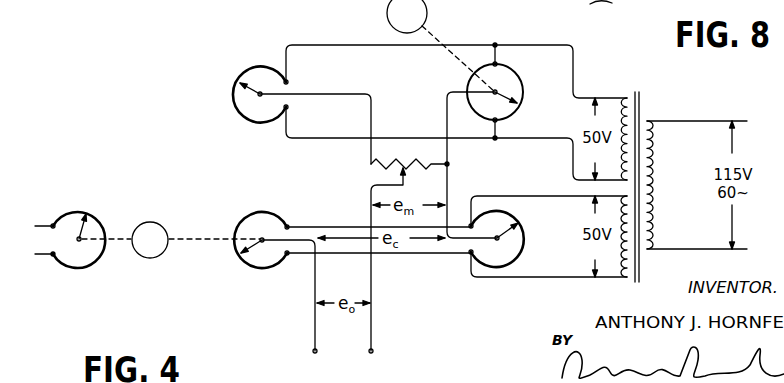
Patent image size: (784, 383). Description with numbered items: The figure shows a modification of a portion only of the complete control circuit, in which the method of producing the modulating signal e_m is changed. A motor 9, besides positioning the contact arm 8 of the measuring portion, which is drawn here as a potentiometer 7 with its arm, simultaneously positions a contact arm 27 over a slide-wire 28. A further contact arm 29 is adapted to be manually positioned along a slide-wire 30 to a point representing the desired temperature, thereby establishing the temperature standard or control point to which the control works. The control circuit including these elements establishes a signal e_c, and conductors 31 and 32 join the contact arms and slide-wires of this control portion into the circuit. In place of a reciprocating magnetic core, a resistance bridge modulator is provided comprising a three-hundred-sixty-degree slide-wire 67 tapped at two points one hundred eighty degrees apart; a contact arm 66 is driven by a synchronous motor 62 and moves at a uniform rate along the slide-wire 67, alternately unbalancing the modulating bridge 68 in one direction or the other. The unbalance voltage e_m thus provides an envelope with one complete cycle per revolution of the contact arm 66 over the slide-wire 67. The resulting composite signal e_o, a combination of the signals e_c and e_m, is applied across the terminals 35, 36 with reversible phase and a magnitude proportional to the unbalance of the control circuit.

The potentiometer 7 is at (84, 268).
The contact arm 8 is at (80, 229).
The motor 9 is at (155, 258).
The contact arm 27 is at (249, 250).
The slide-wire 28 is at (257, 268).
The contact arm 29 is at (507, 228).
The slide-wire 30 is at (517, 219).
The conductor 31 is at (343, 226).
The conductor 32 is at (403, 254).
The terminal 35 is at (292, 308).
The terminal 36 is at (384, 272).
The synchronous motor 62 is at (387, 17).
The contact arm 66 is at (507, 101).
The slide-wire 67 is at (517, 74).
The modulating bridge 68 is at (397, 99).